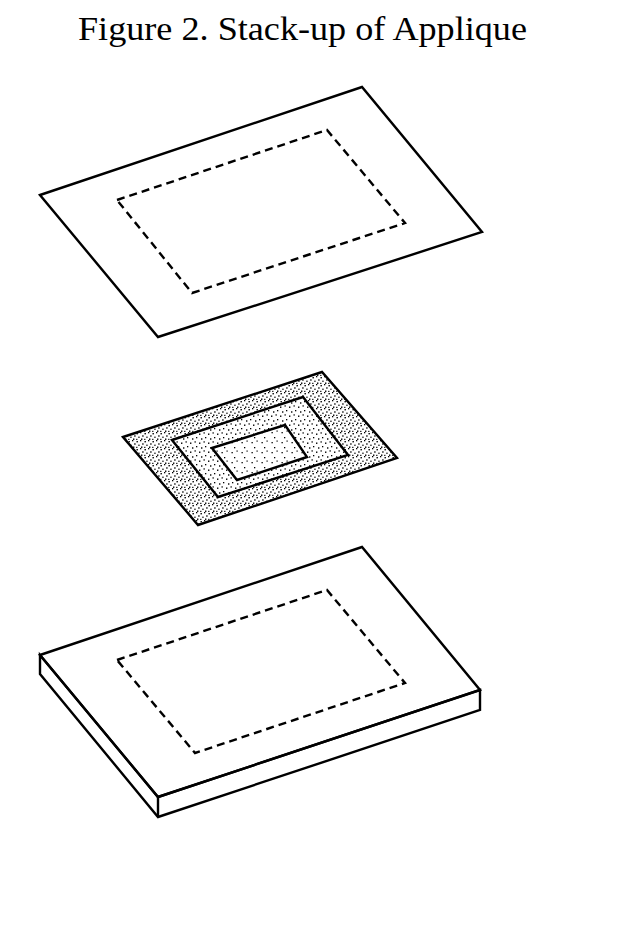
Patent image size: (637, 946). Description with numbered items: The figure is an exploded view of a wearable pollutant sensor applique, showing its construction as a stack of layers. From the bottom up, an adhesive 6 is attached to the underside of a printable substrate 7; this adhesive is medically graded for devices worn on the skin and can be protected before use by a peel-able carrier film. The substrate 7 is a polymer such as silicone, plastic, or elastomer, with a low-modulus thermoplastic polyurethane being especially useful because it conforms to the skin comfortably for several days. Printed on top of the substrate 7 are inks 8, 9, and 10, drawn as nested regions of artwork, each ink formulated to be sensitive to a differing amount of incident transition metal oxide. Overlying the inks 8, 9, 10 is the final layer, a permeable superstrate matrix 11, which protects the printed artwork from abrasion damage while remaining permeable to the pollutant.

The adhesive 6 is at (420, 733).
The printable substrate 7 is at (433, 637).
The ink 8 is at (387, 450).
The ink 9 is at (348, 455).
The ink 10 is at (307, 457).
The permeable superstrate matrix 11 is at (467, 212).